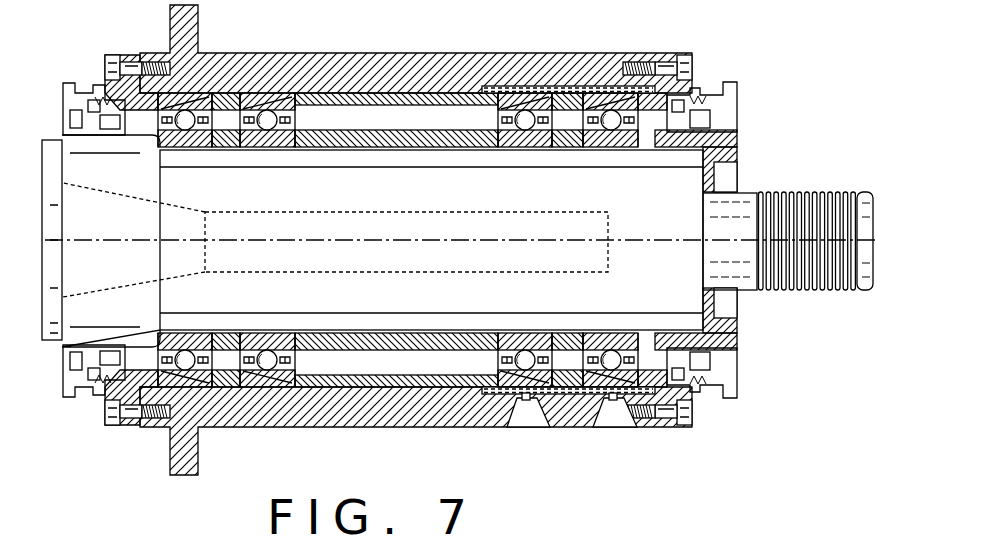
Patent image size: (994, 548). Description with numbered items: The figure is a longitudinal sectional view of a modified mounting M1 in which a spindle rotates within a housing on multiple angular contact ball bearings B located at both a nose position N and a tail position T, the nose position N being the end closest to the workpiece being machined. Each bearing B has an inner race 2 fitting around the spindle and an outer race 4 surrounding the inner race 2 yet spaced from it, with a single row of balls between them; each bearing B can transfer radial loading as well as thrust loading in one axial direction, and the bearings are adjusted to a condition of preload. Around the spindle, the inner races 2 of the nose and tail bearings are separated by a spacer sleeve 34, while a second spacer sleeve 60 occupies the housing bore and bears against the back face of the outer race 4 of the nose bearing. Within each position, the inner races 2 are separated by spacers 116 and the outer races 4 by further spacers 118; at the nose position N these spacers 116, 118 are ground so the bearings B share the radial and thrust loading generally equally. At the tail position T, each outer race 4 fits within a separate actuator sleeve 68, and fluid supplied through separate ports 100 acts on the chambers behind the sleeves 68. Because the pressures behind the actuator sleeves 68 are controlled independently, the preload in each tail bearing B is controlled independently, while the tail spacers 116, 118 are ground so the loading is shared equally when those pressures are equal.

The inner race 2 is at (182, 335).
The outer race 4 is at (208, 400).
The spacer sleeve 34 is at (400, 146).
The spacer sleeve 60 is at (368, 100).
The actuator sleeve 68 is at (520, 88).
The port 100 is at (524, 416).
The spacer 116 is at (226, 342).
The spacer 118 is at (250, 390).
The bearing B is at (221, 109).
The nose position N is at (88, 68).
The tail position T is at (783, 178).
The modified mounting M1 is at (145, 468).